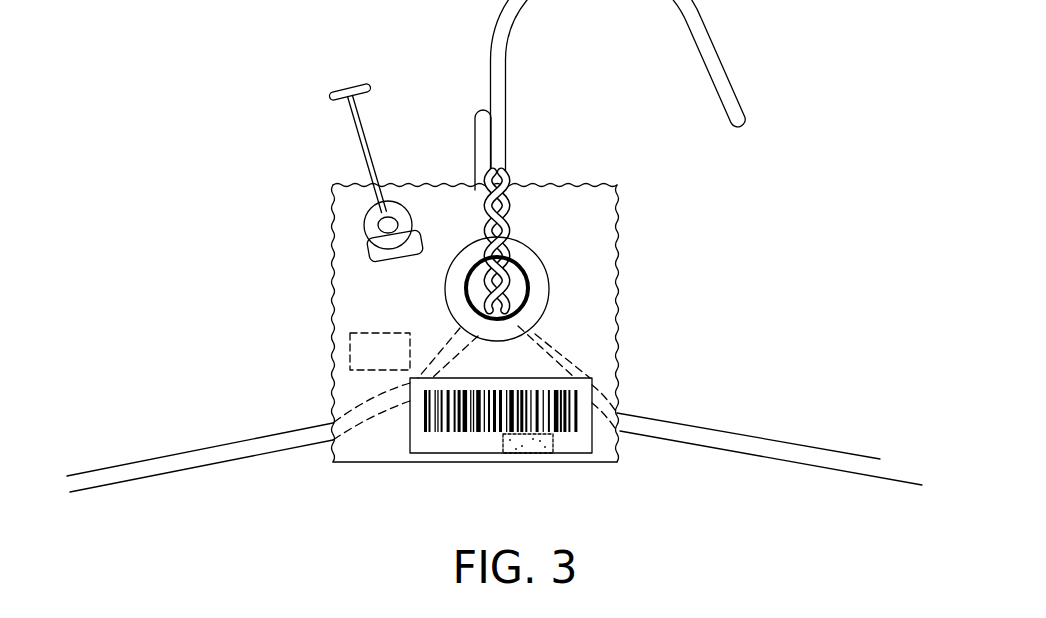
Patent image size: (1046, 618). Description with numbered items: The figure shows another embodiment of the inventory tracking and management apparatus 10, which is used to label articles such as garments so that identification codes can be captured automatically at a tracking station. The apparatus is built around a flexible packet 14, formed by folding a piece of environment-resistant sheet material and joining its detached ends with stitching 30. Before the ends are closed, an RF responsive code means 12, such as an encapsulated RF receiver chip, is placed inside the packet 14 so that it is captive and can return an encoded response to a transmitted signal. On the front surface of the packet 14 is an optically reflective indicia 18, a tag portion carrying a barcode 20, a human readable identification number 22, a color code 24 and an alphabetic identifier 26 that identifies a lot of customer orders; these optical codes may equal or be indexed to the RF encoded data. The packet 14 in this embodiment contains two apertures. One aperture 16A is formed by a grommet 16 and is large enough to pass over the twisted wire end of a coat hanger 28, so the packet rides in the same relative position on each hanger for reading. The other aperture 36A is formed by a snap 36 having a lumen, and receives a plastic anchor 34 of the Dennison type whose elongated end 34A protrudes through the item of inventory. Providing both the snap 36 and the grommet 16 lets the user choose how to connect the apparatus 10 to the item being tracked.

The inventory tracking and management apparatus 10 is at (652, 256).
The RF responsive code means 12 is at (340, 350).
The flexible packet 14 is at (453, 185).
The grommet 16 is at (541, 297).
The aperture 16A is at (522, 278).
The optically reflective indicia 18 is at (458, 365).
The barcode 20 is at (427, 420).
The identification number 22 is at (470, 455).
The color code 24 is at (522, 454).
The alphabetic identifier 26 is at (588, 455).
The coat hanger 28 is at (500, 170).
The stitching 30 is at (333, 233).
The plastic anchor 34 is at (370, 246).
The elongated end 34A is at (343, 90).
The snap 36 is at (368, 215).
The aperture 36A is at (393, 216).